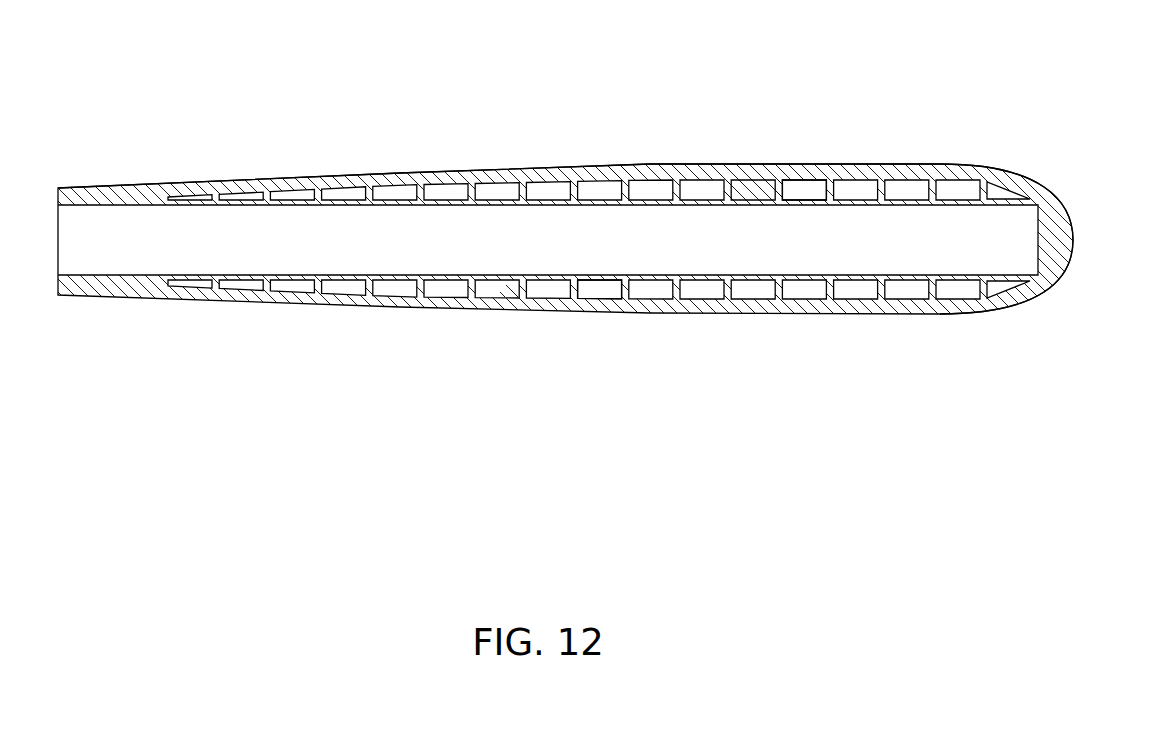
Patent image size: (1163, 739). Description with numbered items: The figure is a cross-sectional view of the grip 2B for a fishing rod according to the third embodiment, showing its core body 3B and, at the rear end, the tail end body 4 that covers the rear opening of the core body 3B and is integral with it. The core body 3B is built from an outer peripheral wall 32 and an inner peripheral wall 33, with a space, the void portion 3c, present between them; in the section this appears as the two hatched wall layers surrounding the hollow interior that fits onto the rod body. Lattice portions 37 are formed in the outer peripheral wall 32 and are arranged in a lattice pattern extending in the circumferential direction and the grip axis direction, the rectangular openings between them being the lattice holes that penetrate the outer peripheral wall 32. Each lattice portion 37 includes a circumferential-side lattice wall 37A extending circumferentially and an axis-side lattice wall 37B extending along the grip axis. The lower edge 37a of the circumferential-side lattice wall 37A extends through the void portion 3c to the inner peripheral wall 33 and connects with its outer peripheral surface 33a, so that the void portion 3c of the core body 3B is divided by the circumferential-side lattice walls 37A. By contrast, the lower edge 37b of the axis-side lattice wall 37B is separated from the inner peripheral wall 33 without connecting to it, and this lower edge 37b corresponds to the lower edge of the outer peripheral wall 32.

The grip 2B is at (670, 98).
The core body 3B is at (468, 171).
The void portion 3c is at (549, 167).
The outer peripheral wall 32 is at (620, 164).
The lattice portion 37 is at (717, 71).
The axis-side lattice wall 37B is at (727, 165).
The circumferential-side lattice wall 37A is at (800, 185).
The outer peripheral surface 33a is at (782, 184).
The inner peripheral wall 33 is at (597, 283).
The lower edge 37b is at (702, 178).
The lower edge 37a is at (777, 178).
The tail end body 4 is at (1076, 238).